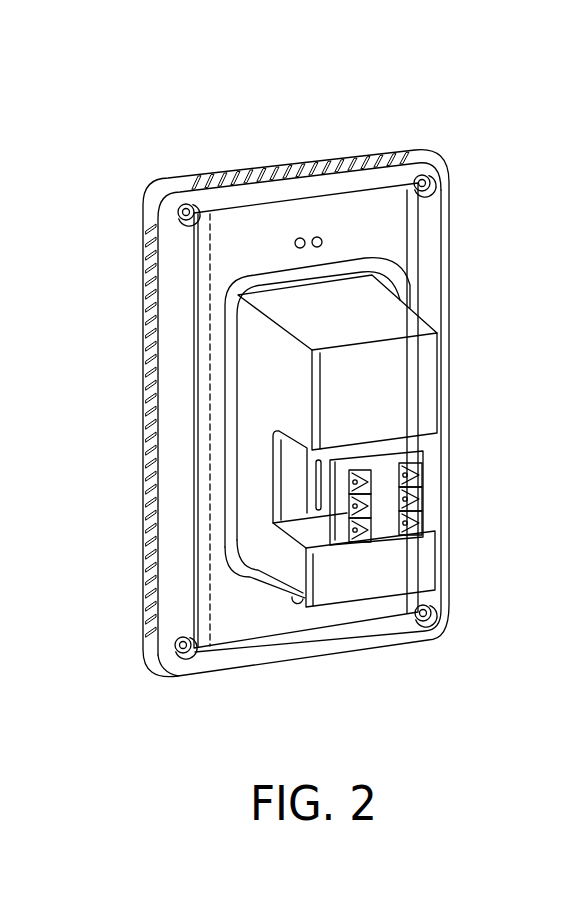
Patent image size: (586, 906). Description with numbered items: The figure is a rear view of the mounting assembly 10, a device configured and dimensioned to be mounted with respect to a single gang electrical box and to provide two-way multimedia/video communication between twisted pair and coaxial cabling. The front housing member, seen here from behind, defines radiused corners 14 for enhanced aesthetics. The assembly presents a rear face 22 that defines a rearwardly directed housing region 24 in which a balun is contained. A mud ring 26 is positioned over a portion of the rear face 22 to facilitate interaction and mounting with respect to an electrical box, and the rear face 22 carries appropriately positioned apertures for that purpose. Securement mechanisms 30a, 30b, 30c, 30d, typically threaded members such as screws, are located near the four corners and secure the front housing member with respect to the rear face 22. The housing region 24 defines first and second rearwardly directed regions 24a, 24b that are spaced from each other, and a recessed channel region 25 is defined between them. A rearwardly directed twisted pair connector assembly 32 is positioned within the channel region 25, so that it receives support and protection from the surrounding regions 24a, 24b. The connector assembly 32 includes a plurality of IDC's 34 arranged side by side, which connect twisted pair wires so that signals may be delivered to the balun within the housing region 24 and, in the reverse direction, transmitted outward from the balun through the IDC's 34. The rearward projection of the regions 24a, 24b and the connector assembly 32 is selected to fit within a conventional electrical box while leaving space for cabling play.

The mounting assembly 10 is at (478, 101).
The radiused corners 14 is at (156, 197).
The rear face 22 is at (398, 243).
The housing region 24 is at (407, 398).
The first rearwardly directed region 24a is at (383, 322).
The second rearwardly directed region 24b is at (417, 575).
The recessed channel region 25 is at (285, 479).
The mud ring 26 is at (205, 609).
The securement mechanism 30a is at (426, 180).
The securement mechanism 30b is at (432, 614).
The securement mechanism 30c is at (183, 650).
The securement mechanism 30d is at (186, 209).
The twisted pair connector assembly 32 is at (395, 464).
The IDC's 34 is at (428, 485).